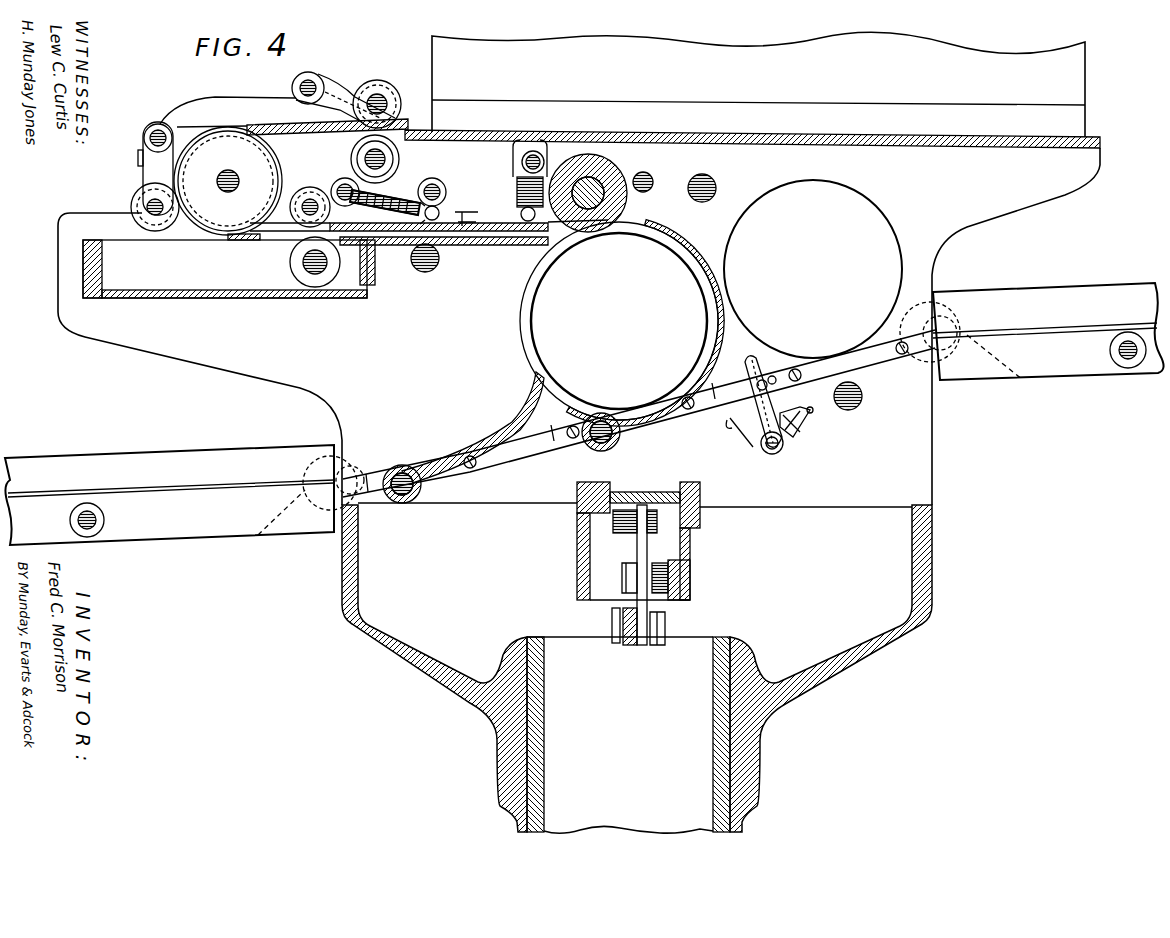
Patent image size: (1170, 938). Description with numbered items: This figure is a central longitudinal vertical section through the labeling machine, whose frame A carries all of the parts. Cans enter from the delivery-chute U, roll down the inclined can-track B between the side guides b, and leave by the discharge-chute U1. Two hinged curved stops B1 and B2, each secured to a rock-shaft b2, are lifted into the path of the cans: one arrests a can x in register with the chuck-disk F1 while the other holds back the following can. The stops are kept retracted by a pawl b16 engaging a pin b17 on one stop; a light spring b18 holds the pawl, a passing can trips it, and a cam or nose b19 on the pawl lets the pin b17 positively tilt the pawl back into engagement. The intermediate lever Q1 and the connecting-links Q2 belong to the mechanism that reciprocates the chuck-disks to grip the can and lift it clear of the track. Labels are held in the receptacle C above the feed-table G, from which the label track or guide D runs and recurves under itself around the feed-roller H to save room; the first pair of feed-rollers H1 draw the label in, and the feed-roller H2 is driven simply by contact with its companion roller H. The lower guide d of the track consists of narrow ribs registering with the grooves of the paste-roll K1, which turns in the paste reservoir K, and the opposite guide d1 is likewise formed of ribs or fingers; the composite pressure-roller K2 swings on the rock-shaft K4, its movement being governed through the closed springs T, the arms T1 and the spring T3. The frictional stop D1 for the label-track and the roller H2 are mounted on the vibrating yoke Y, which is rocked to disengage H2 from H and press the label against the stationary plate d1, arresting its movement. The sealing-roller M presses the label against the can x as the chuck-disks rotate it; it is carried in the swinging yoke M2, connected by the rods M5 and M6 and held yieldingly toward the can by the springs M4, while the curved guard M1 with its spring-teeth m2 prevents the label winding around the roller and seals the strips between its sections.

The frame A is at (930, 565).
The label receptacle C is at (811, 100).
The feed-table G is at (877, 140).
The label track D is at (312, 132).
The frictional stop D1 is at (210, 120).
The bracket roller Y is at (155, 168).
The feed-roller H is at (228, 181).
The feed-roller H2 is at (142, 198).
The feed-rollers H1 is at (397, 120).
The pressure-roller K2 is at (305, 193).
The rock-shaft K4 is at (342, 185).
The closed springs T is at (390, 212).
The spring T3 is at (428, 203).
The arms T1 is at (440, 206).
The paste reservoir K is at (229, 266).
The paste-roll K1 is at (315, 280).
The upper guide d1 is at (280, 227).
The lower guides d is at (410, 240).
The cross-bar M6 is at (535, 153).
The swinging yoke M2 is at (524, 158).
The springs M4 is at (520, 183).
The guard M1 is at (527, 223).
The sealing-roller M is at (647, 163).
The cross-bar M5 is at (658, 177).
The spring-teeth m2 is at (620, 218).
The chuck-disk F1 is at (622, 323).
The can x is at (725, 251).
The can-stop B2 is at (523, 400).
The side guides b is at (415, 429).
The rock-shaft b2 is at (603, 446).
The can-track B is at (705, 413).
The can-stop B1 is at (737, 342).
The pin b17 is at (735, 335).
The spring b18 is at (757, 450).
The pawl b16 is at (750, 438).
The cam or nose b19 is at (797, 422).
The intermediate lever Q1 is at (647, 552).
The connecting-links Q2 is at (620, 528).
The delivery-chute U is at (1032, 331).
The discharge-chute U1 is at (184, 495).